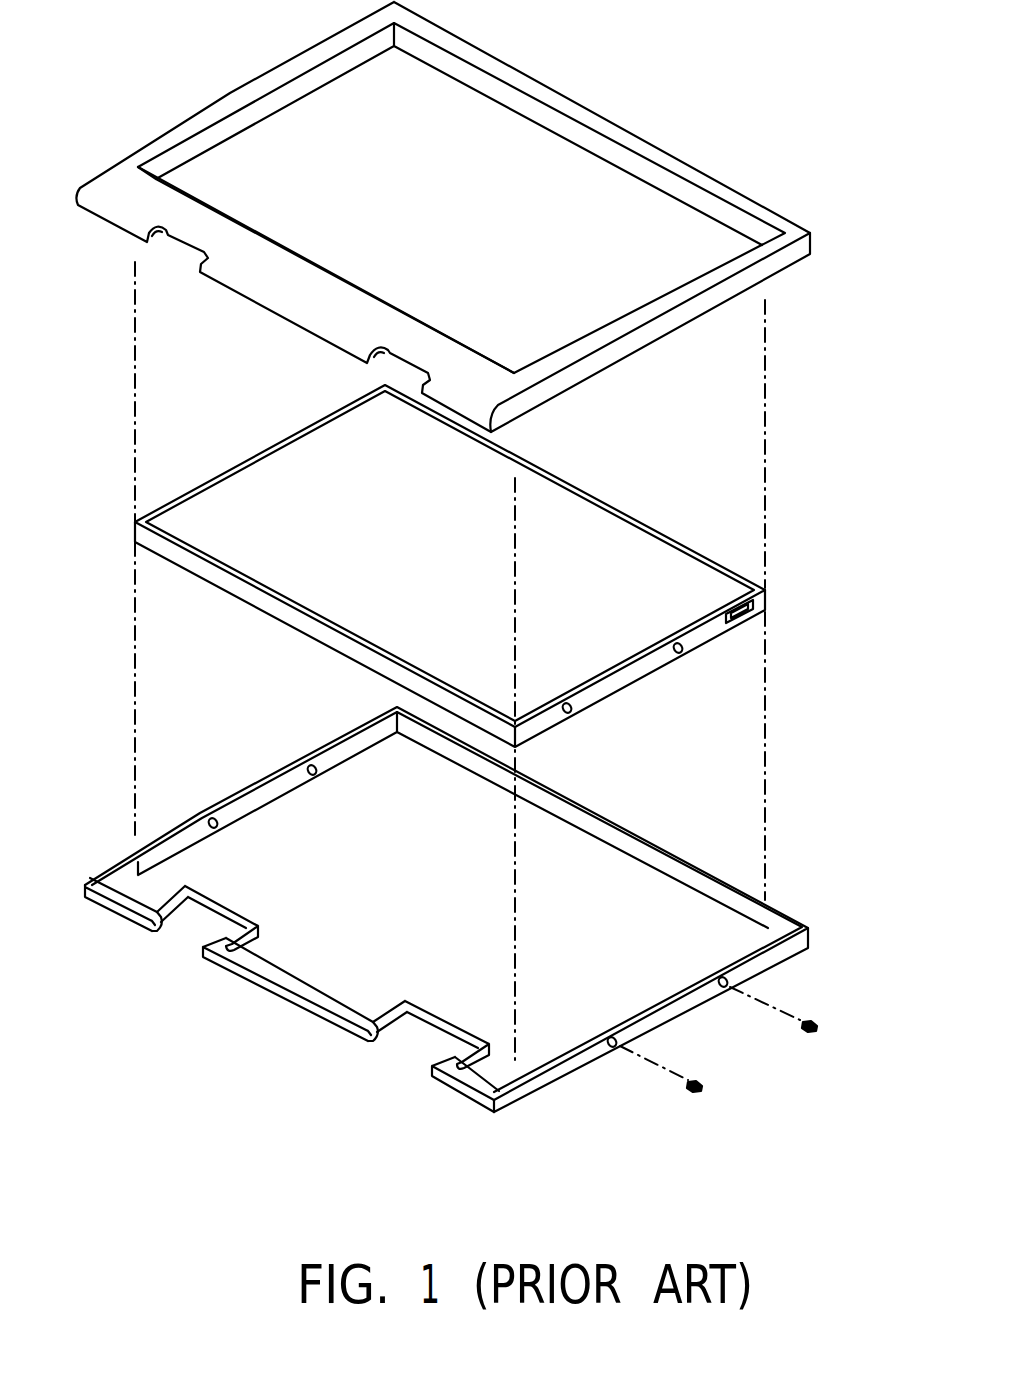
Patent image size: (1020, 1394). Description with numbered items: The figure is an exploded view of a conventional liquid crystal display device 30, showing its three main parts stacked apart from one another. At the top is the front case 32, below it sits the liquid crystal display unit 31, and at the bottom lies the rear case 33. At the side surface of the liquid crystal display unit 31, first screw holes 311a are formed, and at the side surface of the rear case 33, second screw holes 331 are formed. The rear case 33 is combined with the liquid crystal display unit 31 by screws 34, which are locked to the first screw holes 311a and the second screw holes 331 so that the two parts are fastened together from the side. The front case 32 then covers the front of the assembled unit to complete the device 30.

The liquid crystal display device 30 is at (95, 63).
The liquid crystal display unit 31 is at (768, 603).
The first screw holes 311a is at (684, 653).
The front case 32 is at (646, 138).
The rear case 33 is at (810, 938).
The second screw holes 331 is at (612, 1042).
The screws 34 is at (703, 1092).